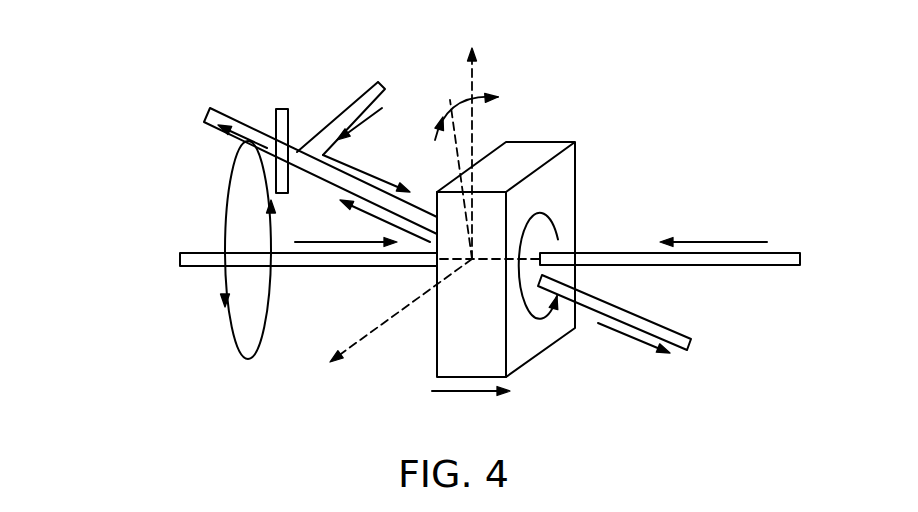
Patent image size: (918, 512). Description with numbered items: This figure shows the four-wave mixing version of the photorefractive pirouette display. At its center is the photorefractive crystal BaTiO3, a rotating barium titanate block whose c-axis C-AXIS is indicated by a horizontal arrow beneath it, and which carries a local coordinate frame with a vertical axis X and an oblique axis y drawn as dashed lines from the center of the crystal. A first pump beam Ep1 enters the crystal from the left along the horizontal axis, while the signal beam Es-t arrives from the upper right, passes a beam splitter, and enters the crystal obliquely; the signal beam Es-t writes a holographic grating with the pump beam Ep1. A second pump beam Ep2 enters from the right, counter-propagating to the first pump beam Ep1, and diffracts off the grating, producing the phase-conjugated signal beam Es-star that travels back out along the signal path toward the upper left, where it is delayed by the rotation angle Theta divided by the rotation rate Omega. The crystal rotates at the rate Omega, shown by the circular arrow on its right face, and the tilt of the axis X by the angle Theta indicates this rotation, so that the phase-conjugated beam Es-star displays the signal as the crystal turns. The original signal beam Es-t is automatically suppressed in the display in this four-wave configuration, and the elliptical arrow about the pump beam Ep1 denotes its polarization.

The photorefractive crystal BaTiO3 is at (520, 242).
The pump beam 1 Ep1 is at (279, 250).
The pump beam 2 Ep2 is at (696, 257).
The signal beam Es-t is at (341, 104).
The phase-conjugated signal beam Es-star is at (246, 159).
The rotation angle Theta is at (455, 103).
The rotation rate Omega is at (538, 282).
The x axis X is at (466, 138).
The y axis y is at (396, 324).
The c-axis C-AXIS is at (471, 405).